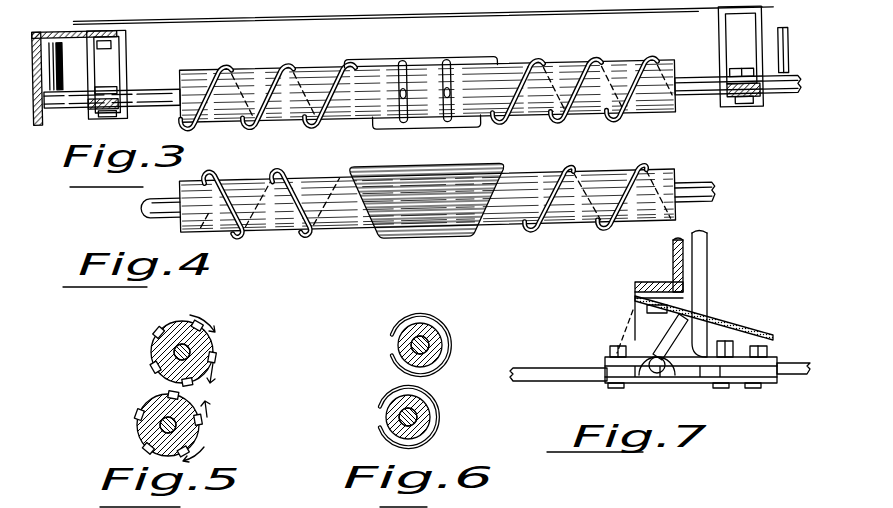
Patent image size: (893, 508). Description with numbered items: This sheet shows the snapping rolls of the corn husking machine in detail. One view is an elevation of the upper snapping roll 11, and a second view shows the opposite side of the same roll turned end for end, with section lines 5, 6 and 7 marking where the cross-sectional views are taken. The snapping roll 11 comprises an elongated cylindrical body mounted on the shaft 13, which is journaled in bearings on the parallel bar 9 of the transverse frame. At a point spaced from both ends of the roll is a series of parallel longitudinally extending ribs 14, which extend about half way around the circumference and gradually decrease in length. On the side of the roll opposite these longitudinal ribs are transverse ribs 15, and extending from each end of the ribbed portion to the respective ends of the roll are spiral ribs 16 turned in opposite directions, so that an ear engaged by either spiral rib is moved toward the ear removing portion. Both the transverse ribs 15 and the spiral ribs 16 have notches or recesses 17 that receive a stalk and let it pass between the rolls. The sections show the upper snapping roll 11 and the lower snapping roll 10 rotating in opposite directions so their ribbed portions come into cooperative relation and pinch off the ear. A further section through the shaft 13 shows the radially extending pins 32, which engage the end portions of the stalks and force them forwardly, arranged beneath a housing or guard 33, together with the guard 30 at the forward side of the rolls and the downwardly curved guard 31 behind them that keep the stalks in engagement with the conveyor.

In FIG. 4, the table 5 is at (427, 245).
In FIG. 4, the sloping forward portion of table 6 is at (587, 246).
In FIG. 3, the upright portion of table 7 is at (45, 151).
In FIG. 3, the parallel bar of transverse frame 9 is at (682, 14).
In FIG. 7, the parallel bar of transverse frame 9 is at (672, 248).
In FIG. 5, the snapping roll 10 is at (197, 414).
In FIG. 6, the snapping roll 10 is at (393, 404).
In FIG. 4, the upper snapping roll 11 is at (237, 173).
In FIG. 5, the upper snapping roll 11 is at (198, 358).
In FIG. 6, the upper snapping roll 11 is at (411, 330).
In FIG. 3, the shaft 13 is at (78, 99).
In FIG. 4, the shaft 13 is at (703, 191).
In FIG. 5, the shaft 13 is at (167, 412).
In FIG. 6, the shaft 13 is at (408, 396).
In FIG. 7, the shaft 13 is at (649, 373).
In FIG. 4, the longitudinally extending ribs 14 is at (411, 228).
In FIG. 5, the longitudinally extending ribs 14 is at (215, 331).
In FIG. 3, the transverse ribs 15 is at (402, 124).
In FIG. 5, the transverse ribs 15 is at (174, 322).
In FIG. 3, the spiral ribs 16 is at (313, 123).
In FIG. 4, the spiral ribs 16 is at (318, 232).
In FIG. 6, the spiral ribs 16 is at (452, 345).
In FIG. 3, the notches or recesses 17 is at (190, 94).
In FIG. 5, the notches or recesses 17 is at (153, 351).
In FIG. 6, the notches or recesses 17 is at (392, 347).
In FIG. 7, the guard 30 is at (790, 362).
In FIG. 7, the downwardly curved guards 31 is at (565, 358).
In FIG. 3, the radially extending pins 32 is at (79, 57).
In FIG. 7, the radially extending pins 32 is at (667, 330).
In FIG. 3, the housing or guards 33 is at (91, 33).
In FIG. 7, the housing or guards 33 is at (727, 313).